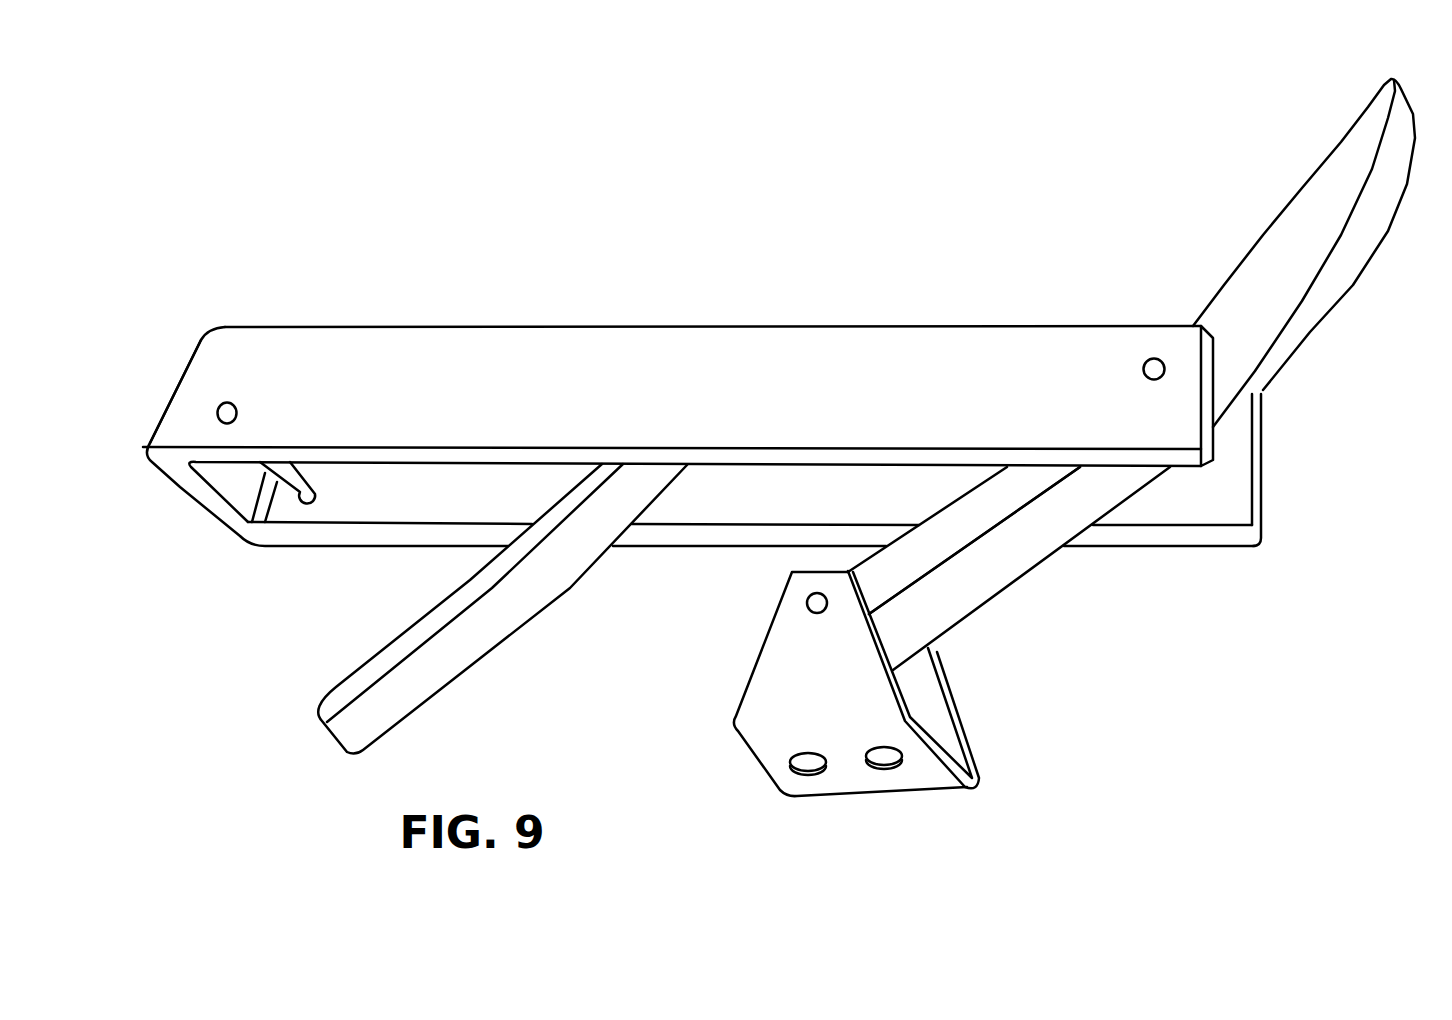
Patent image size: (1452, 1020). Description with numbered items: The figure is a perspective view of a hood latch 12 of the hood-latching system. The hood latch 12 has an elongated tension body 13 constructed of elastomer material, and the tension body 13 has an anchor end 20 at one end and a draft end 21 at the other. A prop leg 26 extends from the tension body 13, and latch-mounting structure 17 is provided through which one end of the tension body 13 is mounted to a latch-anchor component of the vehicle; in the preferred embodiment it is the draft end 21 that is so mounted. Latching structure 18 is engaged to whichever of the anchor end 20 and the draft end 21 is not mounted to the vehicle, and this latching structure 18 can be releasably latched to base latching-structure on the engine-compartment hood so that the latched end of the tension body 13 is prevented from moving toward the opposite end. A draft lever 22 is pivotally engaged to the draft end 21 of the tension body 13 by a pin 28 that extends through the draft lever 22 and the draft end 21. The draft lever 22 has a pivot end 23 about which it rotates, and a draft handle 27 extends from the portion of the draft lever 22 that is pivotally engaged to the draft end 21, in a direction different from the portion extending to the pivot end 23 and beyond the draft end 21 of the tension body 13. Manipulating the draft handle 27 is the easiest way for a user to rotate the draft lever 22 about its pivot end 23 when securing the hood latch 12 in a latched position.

The hood latch 12 is at (705, 363).
The tension body 13 is at (528, 358).
The latch-mounting structure 17 is at (930, 710).
The latching structure 18 is at (297, 492).
The anchor end 20 is at (210, 343).
The draft end 21 is at (1080, 342).
The draft lever 22 is at (1032, 542).
The pivot end 23 is at (908, 623).
The prop leg 26 is at (497, 632).
The draft handle 27 is at (1312, 188).
The pin 28 is at (1157, 358).